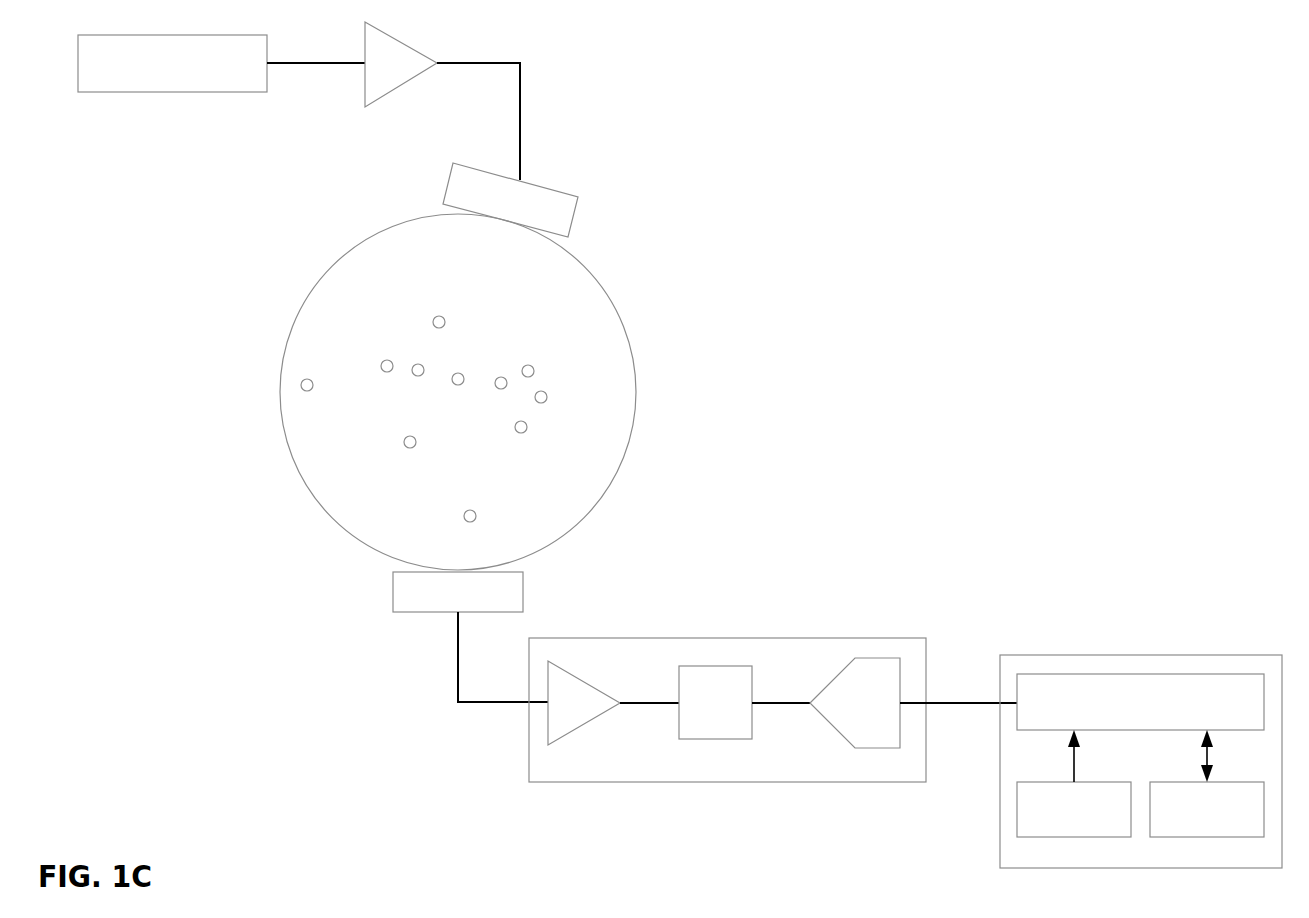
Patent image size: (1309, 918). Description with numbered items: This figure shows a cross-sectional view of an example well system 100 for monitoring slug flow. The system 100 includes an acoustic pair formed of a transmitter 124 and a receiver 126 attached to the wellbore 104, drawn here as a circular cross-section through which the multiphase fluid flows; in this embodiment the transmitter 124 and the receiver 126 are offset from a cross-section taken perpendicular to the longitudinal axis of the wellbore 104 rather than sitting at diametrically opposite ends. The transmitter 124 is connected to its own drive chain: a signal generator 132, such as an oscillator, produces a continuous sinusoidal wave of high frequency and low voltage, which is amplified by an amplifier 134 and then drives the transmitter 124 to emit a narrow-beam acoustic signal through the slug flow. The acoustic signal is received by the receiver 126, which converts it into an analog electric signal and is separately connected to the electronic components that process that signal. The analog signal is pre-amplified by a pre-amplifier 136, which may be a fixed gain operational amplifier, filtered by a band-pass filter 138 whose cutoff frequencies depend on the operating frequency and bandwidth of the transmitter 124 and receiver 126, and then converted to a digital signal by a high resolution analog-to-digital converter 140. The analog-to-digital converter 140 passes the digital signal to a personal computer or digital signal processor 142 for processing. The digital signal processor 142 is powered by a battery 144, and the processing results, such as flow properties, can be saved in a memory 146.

The system 100 is at (212, 611).
The wellbore 104 is at (360, 297).
The transmitter 124 is at (547, 215).
The receiver 126 is at (419, 612).
The signal generator 132 is at (193, 77).
The amplifier 134 is at (414, 77).
The pre-amplifier 136 is at (593, 717).
The band-pass filter 138 is at (736, 717).
The analog-to-digital converter 140 is at (886, 717).
The digital signal processor 142 is at (1161, 717).
The battery 144 is at (1095, 822).
The memory 146 is at (1228, 822).